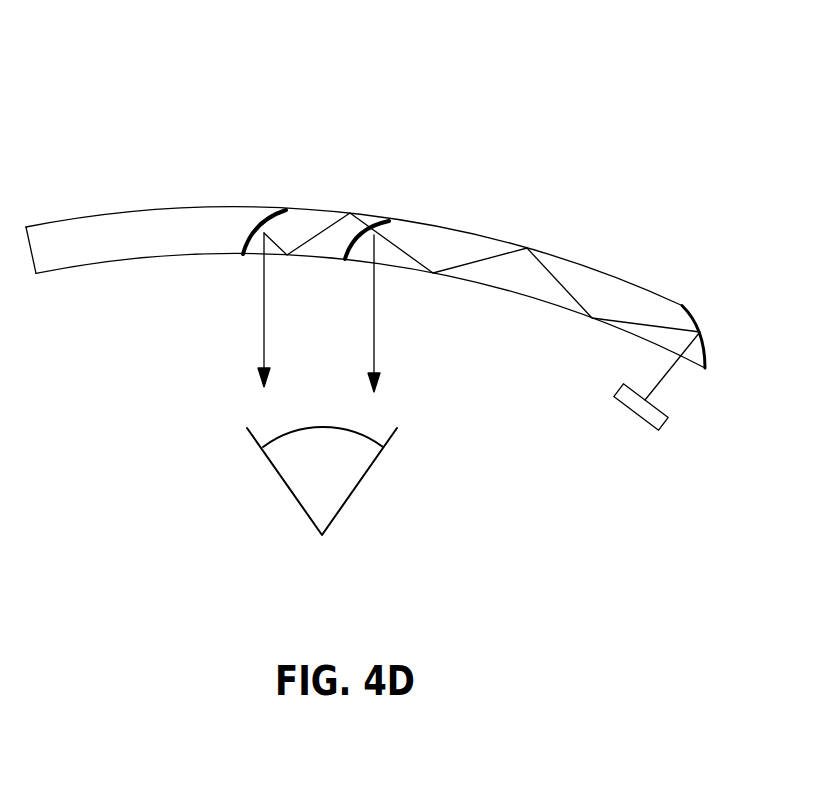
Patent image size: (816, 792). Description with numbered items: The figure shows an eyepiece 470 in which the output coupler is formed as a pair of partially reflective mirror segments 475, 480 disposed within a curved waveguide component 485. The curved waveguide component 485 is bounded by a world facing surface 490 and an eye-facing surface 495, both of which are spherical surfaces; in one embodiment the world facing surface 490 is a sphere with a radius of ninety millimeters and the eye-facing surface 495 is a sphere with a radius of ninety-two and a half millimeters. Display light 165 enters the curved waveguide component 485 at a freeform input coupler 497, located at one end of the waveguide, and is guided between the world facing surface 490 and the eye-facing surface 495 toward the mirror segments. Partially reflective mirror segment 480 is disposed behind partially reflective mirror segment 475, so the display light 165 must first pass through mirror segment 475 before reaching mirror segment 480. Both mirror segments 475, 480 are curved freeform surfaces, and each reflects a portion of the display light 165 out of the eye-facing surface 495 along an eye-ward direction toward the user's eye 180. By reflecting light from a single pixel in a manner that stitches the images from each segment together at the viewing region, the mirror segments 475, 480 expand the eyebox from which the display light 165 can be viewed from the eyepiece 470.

The eyepiece 470 is at (705, 81).
The curved waveguide component 485 is at (501, 282).
The world facing surface 490 is at (470, 233).
The eye-facing surface 495 is at (557, 306).
The partially reflective mirror segment 480 is at (272, 213).
The partially reflective mirror segment 475 is at (377, 222).
The input coupler 497 is at (698, 322).
The display light 165 is at (670, 376).
The user's eye 180 is at (303, 484).